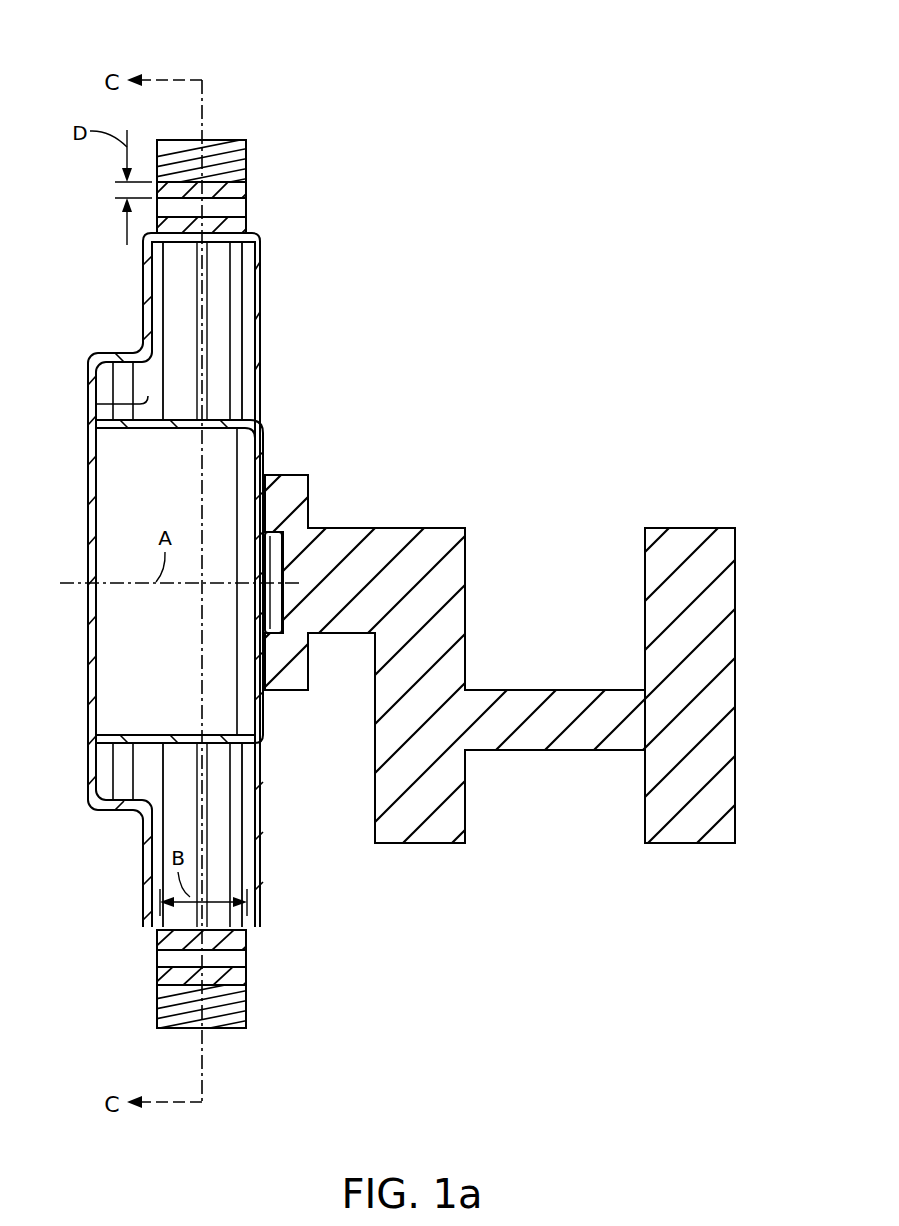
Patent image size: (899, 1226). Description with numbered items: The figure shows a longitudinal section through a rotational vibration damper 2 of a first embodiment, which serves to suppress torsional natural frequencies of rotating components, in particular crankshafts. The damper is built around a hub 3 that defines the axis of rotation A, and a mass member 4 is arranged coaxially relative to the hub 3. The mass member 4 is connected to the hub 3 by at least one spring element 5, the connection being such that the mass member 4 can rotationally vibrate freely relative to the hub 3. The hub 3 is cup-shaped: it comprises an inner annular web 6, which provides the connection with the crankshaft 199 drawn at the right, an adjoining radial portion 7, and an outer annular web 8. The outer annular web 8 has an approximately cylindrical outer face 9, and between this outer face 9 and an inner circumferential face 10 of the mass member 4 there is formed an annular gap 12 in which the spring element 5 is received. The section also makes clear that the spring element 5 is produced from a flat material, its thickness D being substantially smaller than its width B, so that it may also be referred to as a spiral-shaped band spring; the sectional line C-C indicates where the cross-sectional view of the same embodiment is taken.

The rotational vibration damper 2 is at (55, 70).
The hub 3 is at (278, 700).
The mass member 4 is at (240, 165).
The spring element 5 is at (262, 194).
The inner annular web 6 is at (216, 420).
The radial portion 7 is at (142, 300).
The outer annular web 8 is at (204, 248).
The outer face 9 is at (226, 938).
The inner circumferential face 10 is at (216, 977).
The annular gap 12 is at (172, 957).
The crankshaft 199 is at (737, 686).